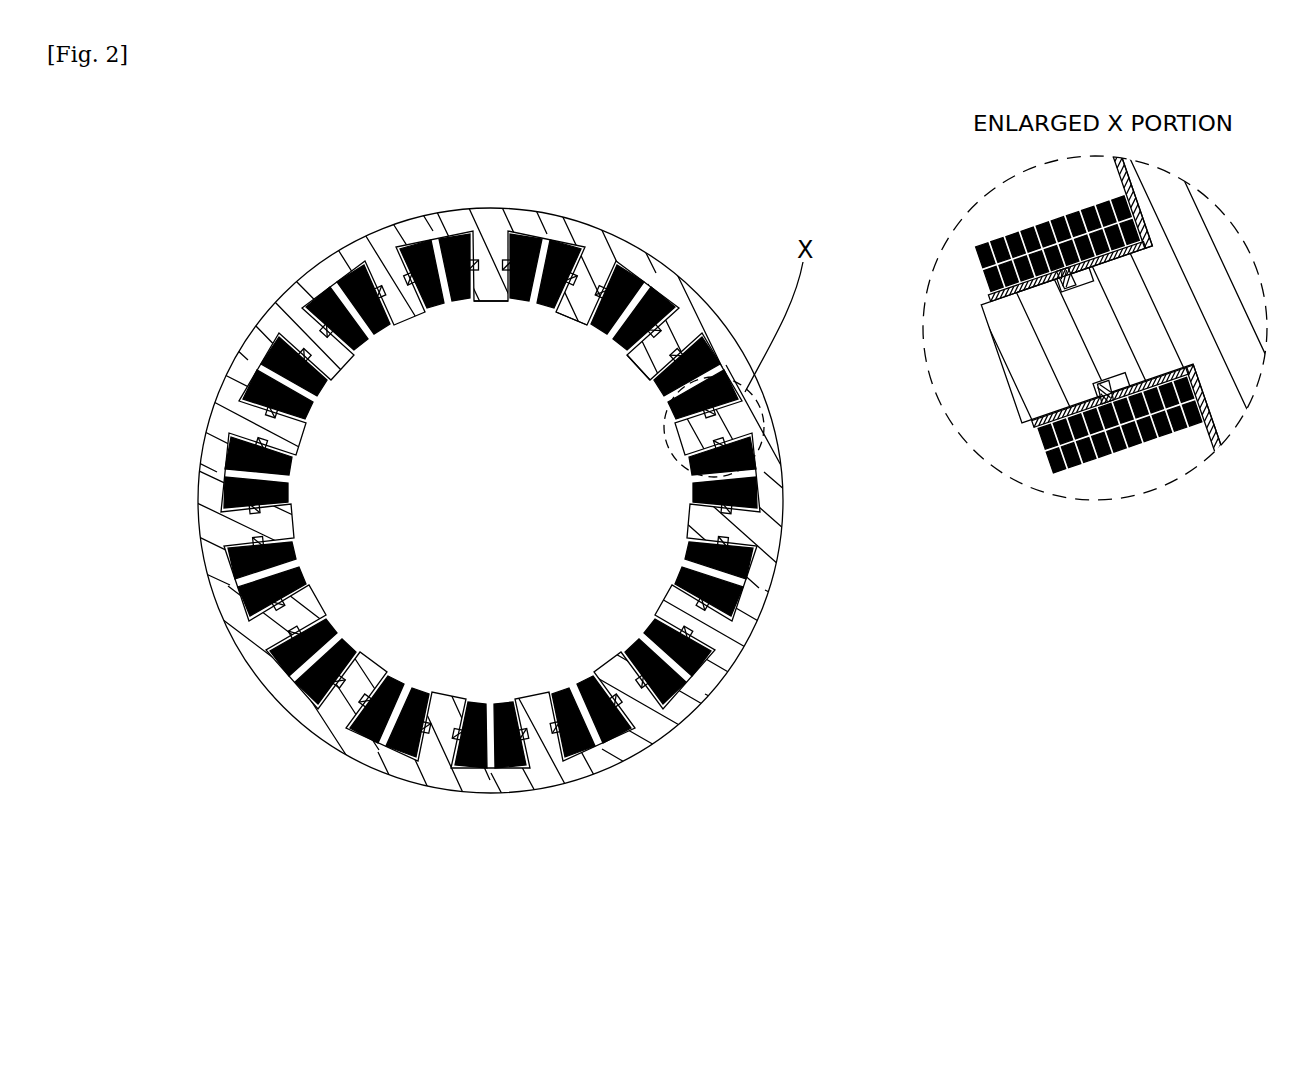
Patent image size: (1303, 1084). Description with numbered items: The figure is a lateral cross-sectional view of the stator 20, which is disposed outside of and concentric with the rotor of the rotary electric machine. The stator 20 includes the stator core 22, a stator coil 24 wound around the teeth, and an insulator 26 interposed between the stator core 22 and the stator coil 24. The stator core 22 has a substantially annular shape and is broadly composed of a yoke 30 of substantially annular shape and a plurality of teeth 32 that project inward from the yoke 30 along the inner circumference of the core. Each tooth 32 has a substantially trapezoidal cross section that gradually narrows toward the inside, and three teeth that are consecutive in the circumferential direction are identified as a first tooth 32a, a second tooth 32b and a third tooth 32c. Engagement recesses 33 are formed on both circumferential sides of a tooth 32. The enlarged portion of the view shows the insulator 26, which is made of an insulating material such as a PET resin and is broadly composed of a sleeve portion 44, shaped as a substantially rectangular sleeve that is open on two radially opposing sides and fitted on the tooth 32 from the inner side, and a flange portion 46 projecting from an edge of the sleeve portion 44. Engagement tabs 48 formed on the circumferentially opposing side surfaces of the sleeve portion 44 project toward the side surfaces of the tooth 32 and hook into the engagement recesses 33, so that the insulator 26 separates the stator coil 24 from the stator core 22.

The stator 20 is at (490, 517).
The stator core 22 is at (579, 908).
The stator coil 24 is at (280, 592).
The insulator 26 is at (1119, 375).
The yoke 30 is at (566, 780).
The tooth 32 is at (446, 736).
The first tooth 32a is at (490, 302).
The second tooth 32b is at (580, 317).
The third tooth 32c is at (652, 372).
The engagement recess 33 is at (1080, 280).
The sleeve portion 44 is at (1159, 402).
The flange portion 46 is at (1212, 437).
The engagement tab 48 is at (1077, 414).